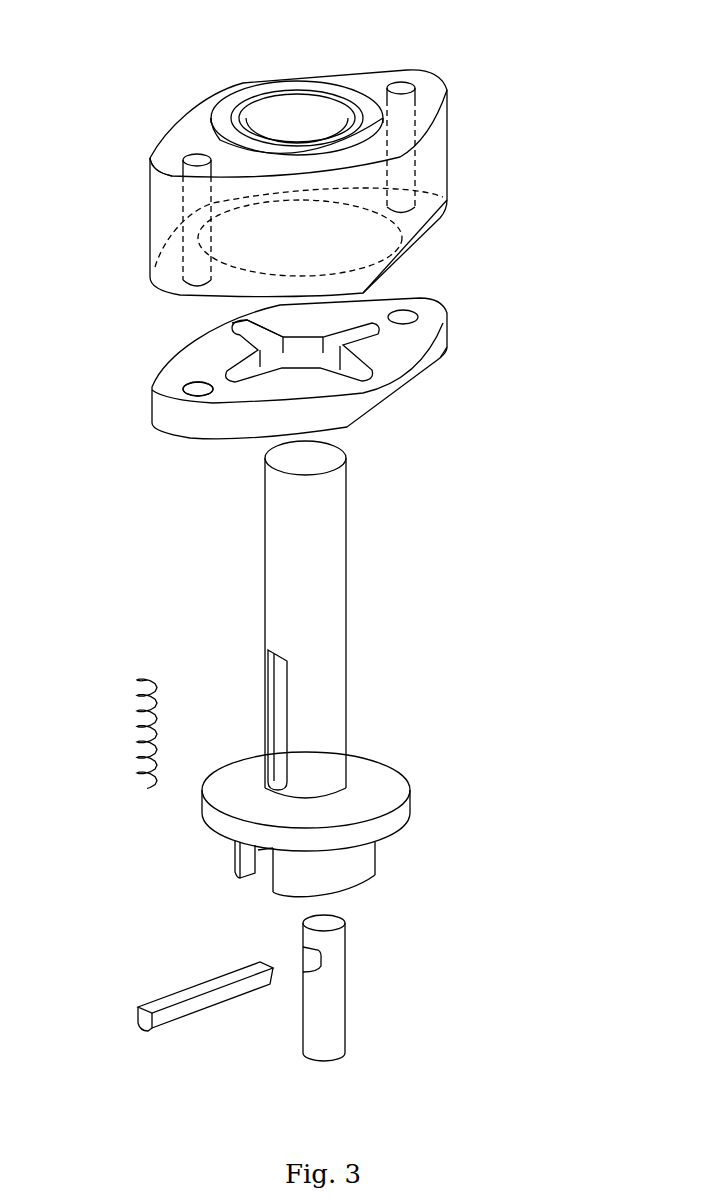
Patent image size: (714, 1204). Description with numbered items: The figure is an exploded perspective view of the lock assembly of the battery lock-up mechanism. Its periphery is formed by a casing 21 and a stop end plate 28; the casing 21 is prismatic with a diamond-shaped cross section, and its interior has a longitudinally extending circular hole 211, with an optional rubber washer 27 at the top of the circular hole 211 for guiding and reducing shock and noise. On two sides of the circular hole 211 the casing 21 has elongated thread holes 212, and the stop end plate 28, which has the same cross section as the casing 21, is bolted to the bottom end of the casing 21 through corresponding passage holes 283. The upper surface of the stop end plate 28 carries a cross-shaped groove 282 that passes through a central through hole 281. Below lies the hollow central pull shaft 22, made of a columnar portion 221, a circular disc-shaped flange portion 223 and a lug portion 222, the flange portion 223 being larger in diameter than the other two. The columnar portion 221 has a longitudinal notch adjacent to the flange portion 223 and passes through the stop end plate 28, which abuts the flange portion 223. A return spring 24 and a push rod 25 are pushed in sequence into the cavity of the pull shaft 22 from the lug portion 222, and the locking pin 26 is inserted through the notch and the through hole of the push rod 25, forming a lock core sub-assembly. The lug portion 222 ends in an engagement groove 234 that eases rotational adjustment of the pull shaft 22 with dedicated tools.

The casing 21 is at (415, 152).
The circular hole 211 is at (290, 113).
The elongated thread holes 212 is at (423, 213).
The washer 27 is at (222, 118).
The stop end plate 28 is at (407, 340).
The central through hole 281 is at (307, 352).
The cross-shaped groove 282 is at (248, 333).
The mounting hole 283 is at (198, 388).
The central pull shaft 22 is at (320, 600).
The columnar portion 221 is at (290, 580).
The flange portion 223 is at (378, 790).
The lug portion 222 is at (248, 857).
The engagement groove 234 is at (263, 873).
The return spring 24 is at (140, 690).
The push rod 25 is at (327, 998).
The locking pin 26 is at (192, 1005).